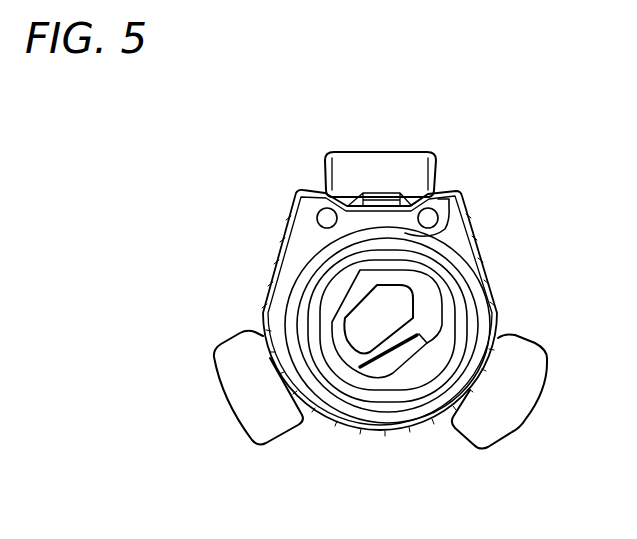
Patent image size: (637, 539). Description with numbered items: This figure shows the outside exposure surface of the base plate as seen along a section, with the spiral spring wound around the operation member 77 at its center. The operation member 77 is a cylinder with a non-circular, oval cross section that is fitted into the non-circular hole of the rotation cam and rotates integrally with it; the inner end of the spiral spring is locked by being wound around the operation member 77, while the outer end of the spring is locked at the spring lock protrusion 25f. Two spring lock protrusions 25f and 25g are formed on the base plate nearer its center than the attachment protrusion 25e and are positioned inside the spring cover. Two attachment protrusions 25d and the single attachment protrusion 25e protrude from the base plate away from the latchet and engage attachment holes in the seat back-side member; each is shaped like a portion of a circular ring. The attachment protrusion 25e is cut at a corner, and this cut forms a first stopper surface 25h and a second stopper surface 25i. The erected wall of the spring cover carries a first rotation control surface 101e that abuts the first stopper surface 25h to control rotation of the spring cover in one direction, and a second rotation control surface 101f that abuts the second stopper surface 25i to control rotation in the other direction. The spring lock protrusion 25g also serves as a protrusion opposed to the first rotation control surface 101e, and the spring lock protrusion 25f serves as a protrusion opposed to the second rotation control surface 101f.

The attachment protrusion 25e is at (397, 173).
The first stopper surface 25h is at (345, 205).
The second stopper surface 25i is at (415, 203).
The first rotation control surface 101e is at (328, 190).
The second rotation control surface 101f is at (432, 189).
The spring lock protrusion 25g is at (320, 216).
The spring lock protrusion 25f is at (436, 220).
The operation member 77 is at (412, 327).
The attachment protrusion 25d is at (272, 425).